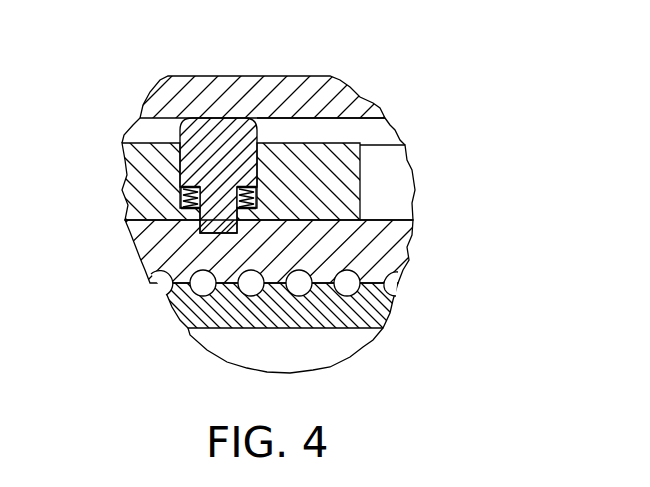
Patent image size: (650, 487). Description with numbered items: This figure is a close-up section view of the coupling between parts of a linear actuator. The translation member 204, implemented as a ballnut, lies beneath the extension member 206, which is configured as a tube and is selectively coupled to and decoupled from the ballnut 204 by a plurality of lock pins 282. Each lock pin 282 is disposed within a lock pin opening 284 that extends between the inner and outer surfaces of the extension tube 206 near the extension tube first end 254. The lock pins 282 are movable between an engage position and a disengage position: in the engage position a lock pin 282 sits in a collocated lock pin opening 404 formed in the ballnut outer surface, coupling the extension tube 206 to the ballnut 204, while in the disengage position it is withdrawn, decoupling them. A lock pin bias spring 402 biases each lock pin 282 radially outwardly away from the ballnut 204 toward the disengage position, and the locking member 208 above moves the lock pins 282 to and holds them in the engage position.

The translation member 204 is at (405, 248).
The extension member 206 is at (340, 147).
The locking member 208 is at (253, 83).
The first end 254 is at (360, 200).
The lock pins 282 is at (210, 128).
The lock pin openings 284 is at (260, 148).
The lock pin bias spring 402 is at (181, 202).
The lock pin openings 404 is at (220, 228).